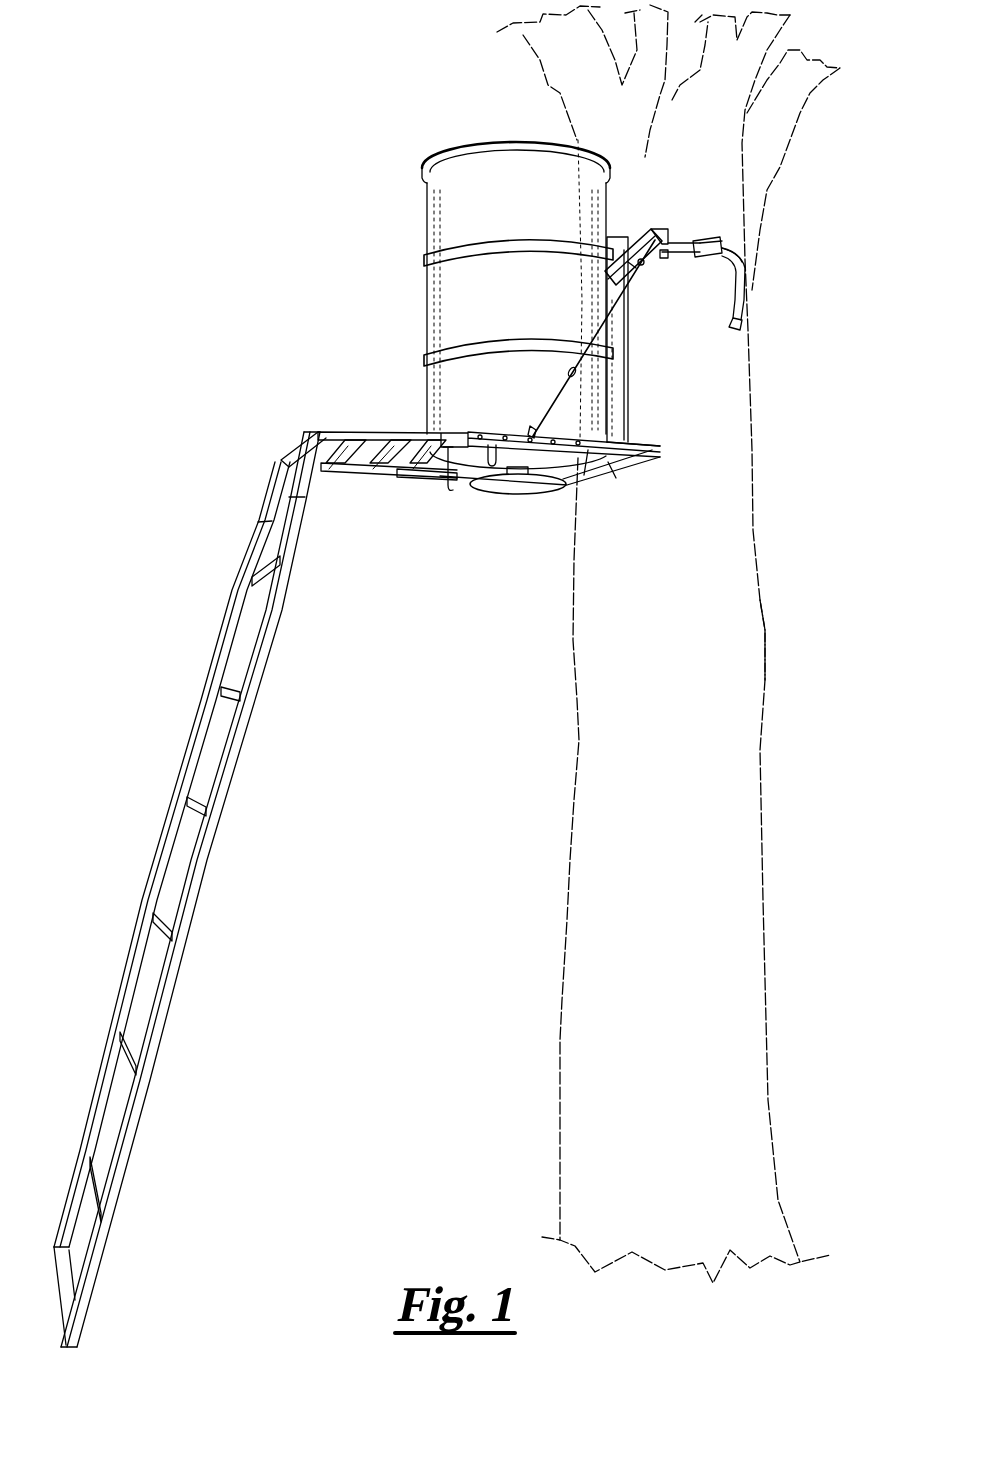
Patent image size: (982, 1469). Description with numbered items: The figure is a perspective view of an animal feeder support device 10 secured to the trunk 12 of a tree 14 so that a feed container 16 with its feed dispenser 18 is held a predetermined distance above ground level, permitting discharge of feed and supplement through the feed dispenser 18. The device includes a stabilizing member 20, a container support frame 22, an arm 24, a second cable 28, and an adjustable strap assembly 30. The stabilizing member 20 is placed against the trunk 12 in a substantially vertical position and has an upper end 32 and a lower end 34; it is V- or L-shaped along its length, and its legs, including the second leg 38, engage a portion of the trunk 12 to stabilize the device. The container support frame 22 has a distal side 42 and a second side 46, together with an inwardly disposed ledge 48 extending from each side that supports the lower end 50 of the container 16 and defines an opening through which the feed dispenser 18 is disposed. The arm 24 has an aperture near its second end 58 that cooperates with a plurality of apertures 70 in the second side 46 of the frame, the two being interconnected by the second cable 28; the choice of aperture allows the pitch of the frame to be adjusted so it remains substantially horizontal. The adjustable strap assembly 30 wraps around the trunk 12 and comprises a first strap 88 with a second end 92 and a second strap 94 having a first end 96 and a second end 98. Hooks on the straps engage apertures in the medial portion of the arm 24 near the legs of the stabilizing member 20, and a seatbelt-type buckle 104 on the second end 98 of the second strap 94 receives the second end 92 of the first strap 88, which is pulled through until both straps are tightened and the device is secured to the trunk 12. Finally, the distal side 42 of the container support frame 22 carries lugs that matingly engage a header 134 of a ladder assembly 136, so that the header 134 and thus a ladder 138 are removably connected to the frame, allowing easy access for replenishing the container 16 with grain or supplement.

The animal feeder support device 10 is at (385, 395).
The trunk 12 is at (766, 678).
The tree 14 is at (770, 630).
The feed container 16 is at (425, 216).
The feed dispenser 18 is at (500, 505).
The stabilizing member 20 is at (632, 362).
The container support frame 22 is at (622, 478).
The arm 24 is at (632, 245).
The second cable 28 is at (572, 368).
The adjustable strap assembly 30 is at (748, 262).
The upper end 32 is at (641, 266).
The lower end 34 is at (629, 437).
The second leg 38 is at (630, 330).
The distal side 42 is at (425, 479).
The second side 46 is at (584, 452).
The inwardly disposed ledge 48 is at (447, 470).
The lower end 50 is at (535, 493).
The second end 58 is at (660, 238).
The plurality of apertures 70 is at (548, 440).
The first strap 88 is at (742, 272).
The second end 92 is at (744, 322).
The second strap 94 is at (672, 248).
The first end 96 is at (662, 257).
The second end 98 is at (702, 246).
The buckle 104 is at (724, 245).
The header 134 is at (343, 433).
The ladder assembly 136 is at (205, 889).
The ladder 138 is at (270, 668).